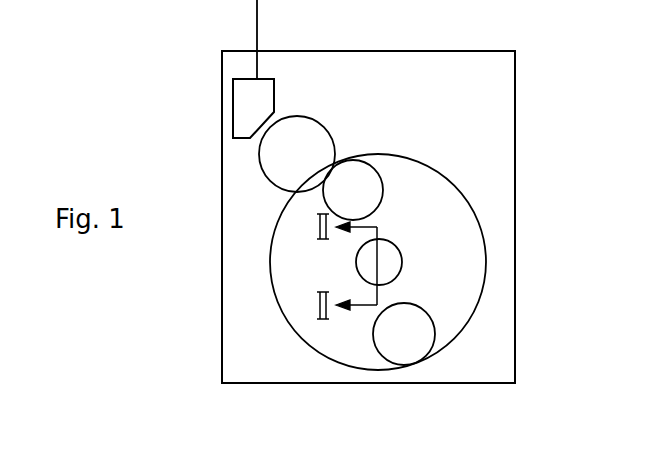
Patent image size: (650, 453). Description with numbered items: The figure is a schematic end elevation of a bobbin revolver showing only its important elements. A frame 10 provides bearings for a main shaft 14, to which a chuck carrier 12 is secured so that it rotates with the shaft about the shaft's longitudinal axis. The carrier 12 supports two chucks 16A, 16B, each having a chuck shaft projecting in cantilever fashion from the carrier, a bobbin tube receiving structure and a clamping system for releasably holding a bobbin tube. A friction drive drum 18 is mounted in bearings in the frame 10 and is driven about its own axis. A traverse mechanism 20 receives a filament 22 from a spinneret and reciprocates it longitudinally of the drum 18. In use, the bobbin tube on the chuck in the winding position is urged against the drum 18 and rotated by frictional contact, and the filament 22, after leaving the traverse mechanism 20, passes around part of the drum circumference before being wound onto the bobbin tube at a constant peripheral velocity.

The frame 10 is at (509, 147).
The chuck carrier 12 is at (479, 249).
The main shaft 14 is at (392, 260).
The chuck 16A is at (371, 175).
The chuck 16B is at (425, 347).
The friction drive drum 18 is at (316, 129).
The traverse mechanism 20 is at (246, 90).
The filament 22 is at (259, 21).